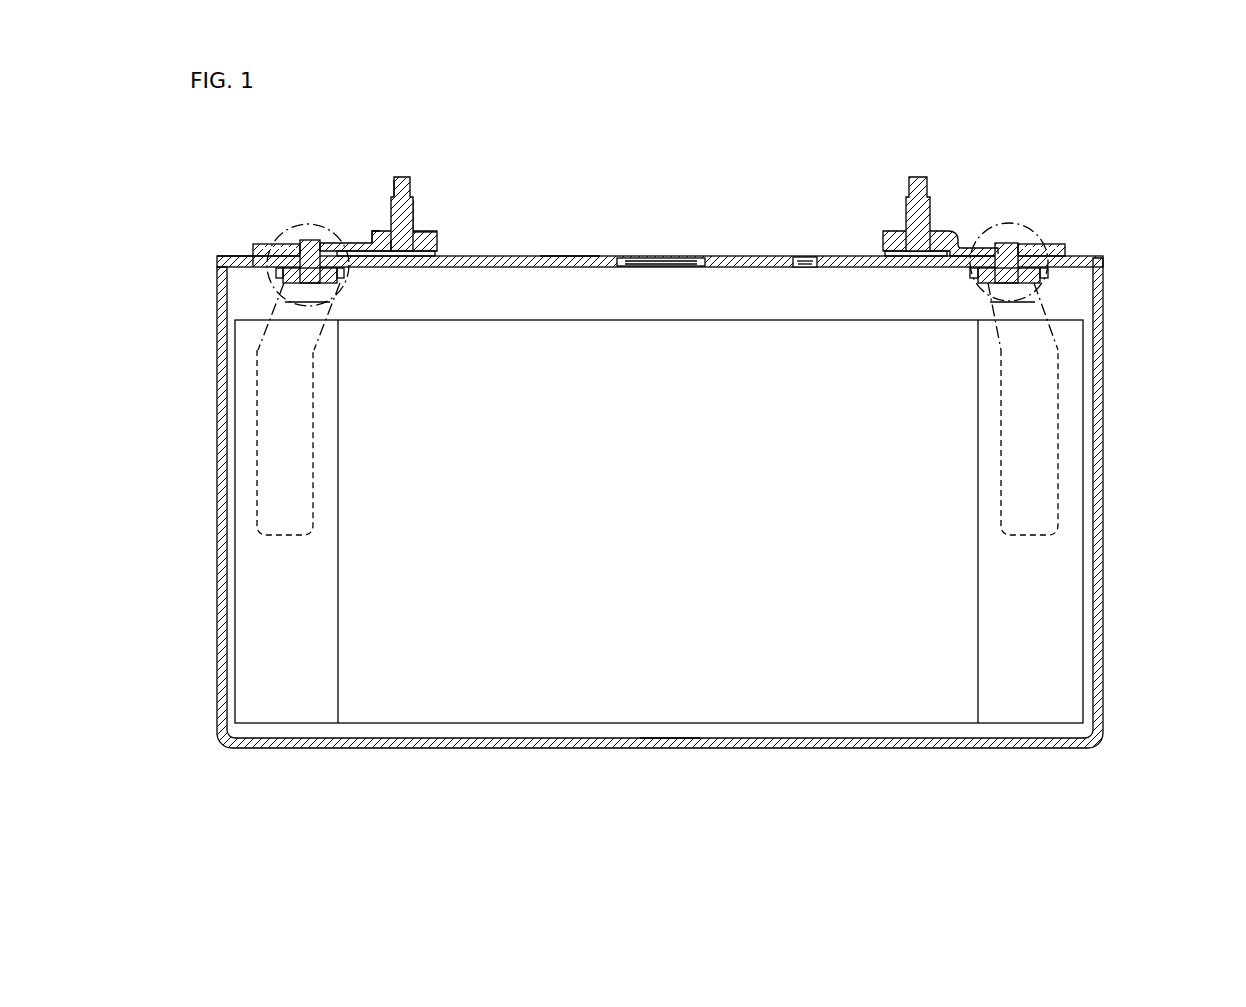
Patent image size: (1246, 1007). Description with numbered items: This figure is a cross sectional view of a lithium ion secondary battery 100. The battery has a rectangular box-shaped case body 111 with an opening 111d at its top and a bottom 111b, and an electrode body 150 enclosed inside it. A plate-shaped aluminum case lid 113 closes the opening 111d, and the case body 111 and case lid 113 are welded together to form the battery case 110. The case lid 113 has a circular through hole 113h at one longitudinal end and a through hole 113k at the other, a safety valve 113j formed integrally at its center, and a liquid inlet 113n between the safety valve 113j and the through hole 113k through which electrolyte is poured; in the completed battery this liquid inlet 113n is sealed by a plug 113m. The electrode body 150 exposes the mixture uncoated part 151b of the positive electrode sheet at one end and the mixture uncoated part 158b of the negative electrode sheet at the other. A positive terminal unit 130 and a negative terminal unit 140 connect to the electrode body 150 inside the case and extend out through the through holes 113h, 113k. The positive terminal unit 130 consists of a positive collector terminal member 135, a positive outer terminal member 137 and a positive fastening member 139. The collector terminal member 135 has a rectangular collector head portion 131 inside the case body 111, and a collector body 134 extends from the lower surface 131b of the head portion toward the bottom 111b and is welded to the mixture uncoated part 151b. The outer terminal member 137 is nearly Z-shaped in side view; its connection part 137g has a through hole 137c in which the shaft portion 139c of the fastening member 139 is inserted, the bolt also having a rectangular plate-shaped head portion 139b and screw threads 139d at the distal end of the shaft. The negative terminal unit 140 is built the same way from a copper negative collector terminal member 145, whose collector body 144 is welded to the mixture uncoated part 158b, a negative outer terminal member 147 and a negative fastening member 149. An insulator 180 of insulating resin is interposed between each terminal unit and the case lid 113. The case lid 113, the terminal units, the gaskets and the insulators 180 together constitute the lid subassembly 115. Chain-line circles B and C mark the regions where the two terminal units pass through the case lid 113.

The battery 100 is at (730, 172).
The battery case 110 is at (691, 491).
The case body 111 is at (669, 506).
The bottom 111b is at (672, 736).
The opening 111d is at (238, 254).
The case lid 113 is at (681, 246).
The through hole 113h is at (268, 247).
The safety valve 113j is at (658, 259).
The through hole 113k is at (1032, 250).
The plug 113m is at (805, 258).
The liquid inlet 113n is at (805, 267).
The lid subassembly 115 is at (560, 252).
The positive terminal unit 130 is at (539, 224).
The collector head portion 131 is at (238, 286).
The lower surface 131b is at (303, 308).
The collector body 134 is at (257, 395).
The positive collector terminal member 135 is at (313, 312).
The positive outer terminal member 137 is at (403, 207).
The through hole 137c is at (415, 204).
The connection part 137g is at (357, 222).
The positive fastening member 139 is at (446, 213).
The head portion 139b is at (398, 252).
The shaft portion 139c is at (436, 231).
The screw threads 139d is at (413, 186).
The negative terminal unit 140 is at (1034, 240).
The collector body 144 is at (1058, 395).
The negative collector terminal member 145 is at (1040, 320).
The negative outer terminal member 147 is at (965, 247).
The negative fastening member 149 is at (917, 177).
The electrode body 150 is at (657, 561).
The mixture uncoated part 151b is at (280, 600).
The mixture uncoated part 158b is at (1040, 600).
The insulator 180 is at (435, 253).
The detail region B is at (283, 230).
The detail region C is at (1050, 240).